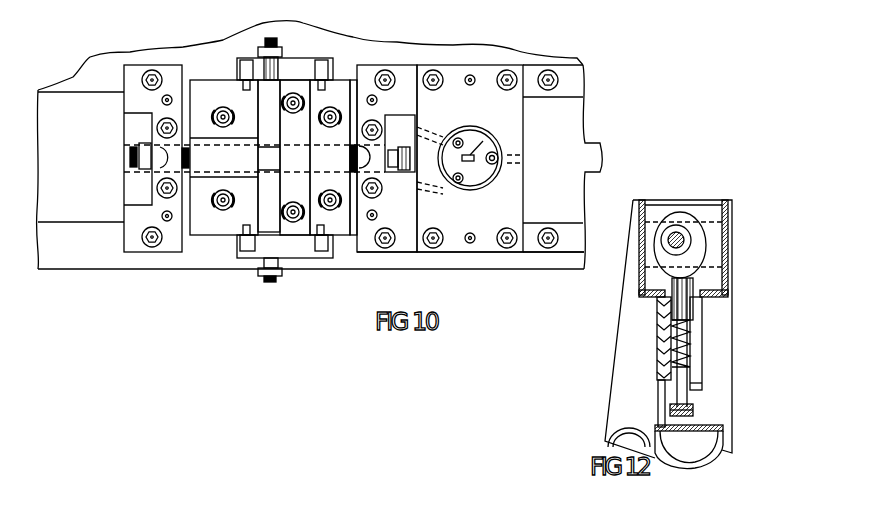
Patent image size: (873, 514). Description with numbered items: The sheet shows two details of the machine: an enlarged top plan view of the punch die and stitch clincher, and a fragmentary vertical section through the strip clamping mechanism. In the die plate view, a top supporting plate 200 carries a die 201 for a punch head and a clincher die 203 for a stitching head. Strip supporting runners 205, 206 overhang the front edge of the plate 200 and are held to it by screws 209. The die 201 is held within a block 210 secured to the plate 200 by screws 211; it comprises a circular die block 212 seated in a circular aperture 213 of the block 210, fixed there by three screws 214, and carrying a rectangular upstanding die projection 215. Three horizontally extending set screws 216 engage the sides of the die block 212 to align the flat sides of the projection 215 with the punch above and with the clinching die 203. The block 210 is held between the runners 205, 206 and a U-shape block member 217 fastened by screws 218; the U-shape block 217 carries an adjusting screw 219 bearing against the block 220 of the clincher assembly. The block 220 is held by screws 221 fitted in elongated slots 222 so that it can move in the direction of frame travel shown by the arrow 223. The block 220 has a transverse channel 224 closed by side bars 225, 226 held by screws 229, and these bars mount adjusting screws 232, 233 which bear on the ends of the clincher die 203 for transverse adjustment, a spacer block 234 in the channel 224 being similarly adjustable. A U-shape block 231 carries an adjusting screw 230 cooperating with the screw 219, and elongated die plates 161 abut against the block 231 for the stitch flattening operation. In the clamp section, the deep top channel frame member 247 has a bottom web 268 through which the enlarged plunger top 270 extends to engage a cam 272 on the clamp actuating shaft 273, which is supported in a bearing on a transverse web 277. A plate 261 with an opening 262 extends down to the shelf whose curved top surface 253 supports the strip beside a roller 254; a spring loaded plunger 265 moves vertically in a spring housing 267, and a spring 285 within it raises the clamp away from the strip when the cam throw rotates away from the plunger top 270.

In FIG. 10, the elongated die plates 161 is at (90, 216).
In FIG. 10, the top supporting plate 200 is at (448, 262).
In FIG. 10, the die 201 is at (540, 165).
In FIG. 10, the clincher die 203 is at (266, 182).
In FIG. 10, the strip supporting runner 205 is at (582, 229).
In FIG. 10, the strip supporting runner 206 is at (578, 76).
In FIG. 10, the screws 209 is at (552, 227).
In FIG. 10, the block 210 is at (518, 113).
In FIG. 10, the screws 211 is at (508, 249).
In FIG. 10, the circular die block 212 is at (483, 137).
In FIG. 10, the circular aperture 213 is at (470, 183).
In FIG. 10, the screws 214 is at (462, 191).
In FIG. 10, the die projection 215 is at (493, 156).
In FIG. 10, the set screws 216 is at (431, 129).
In FIG. 10, the U-shape block member 217 is at (407, 72).
In FIG. 10, the screws 218 is at (387, 72).
In FIG. 10, the adjusting screw 219 is at (400, 147).
In FIG. 10, the block 220 is at (348, 80).
In FIG. 10, the screws 221 is at (226, 124).
In FIG. 10, the elongated slots 222 is at (220, 108).
In FIG. 10, the arrow 223 is at (153, 298).
In FIG. 10, the channel 224 is at (302, 238).
In FIG. 10, the side bar 225 is at (298, 258).
In FIG. 10, the side bar 226 is at (298, 63).
In FIG. 10, the screws 229 is at (251, 260).
In FIG. 10, the adjusting screw 230 is at (128, 155).
In FIG. 10, the U-shape block 231 is at (145, 68).
In FIG. 10, the adjusting screw 232 is at (270, 37).
In FIG. 10, the adjusting screw 233 is at (274, 278).
In FIG. 10, the spacer block 234 is at (302, 132).
In FIG. 12, the top channel frame member 247 is at (664, 206).
In FIG. 12, the curved top surface 253 is at (700, 433).
In FIG. 12, the roller 254 is at (607, 428).
In FIG. 12, the plate 261 is at (673, 318).
In FIG. 12, the opening 262 is at (662, 410).
In FIG. 12, the spring loaded plunger 265 is at (690, 408).
In FIG. 12, the spring housing 267 is at (690, 342).
In FIG. 12, the bottom web 268 is at (713, 295).
In FIG. 12, the plunger top 270 is at (673, 303).
In FIG. 12, the cam 272 is at (702, 245).
In FIG. 12, the clamp actuating shaft 273 is at (687, 237).
In FIG. 12, the transverse web 277 is at (713, 223).
In FIG. 12, the spring 285 is at (663, 360).